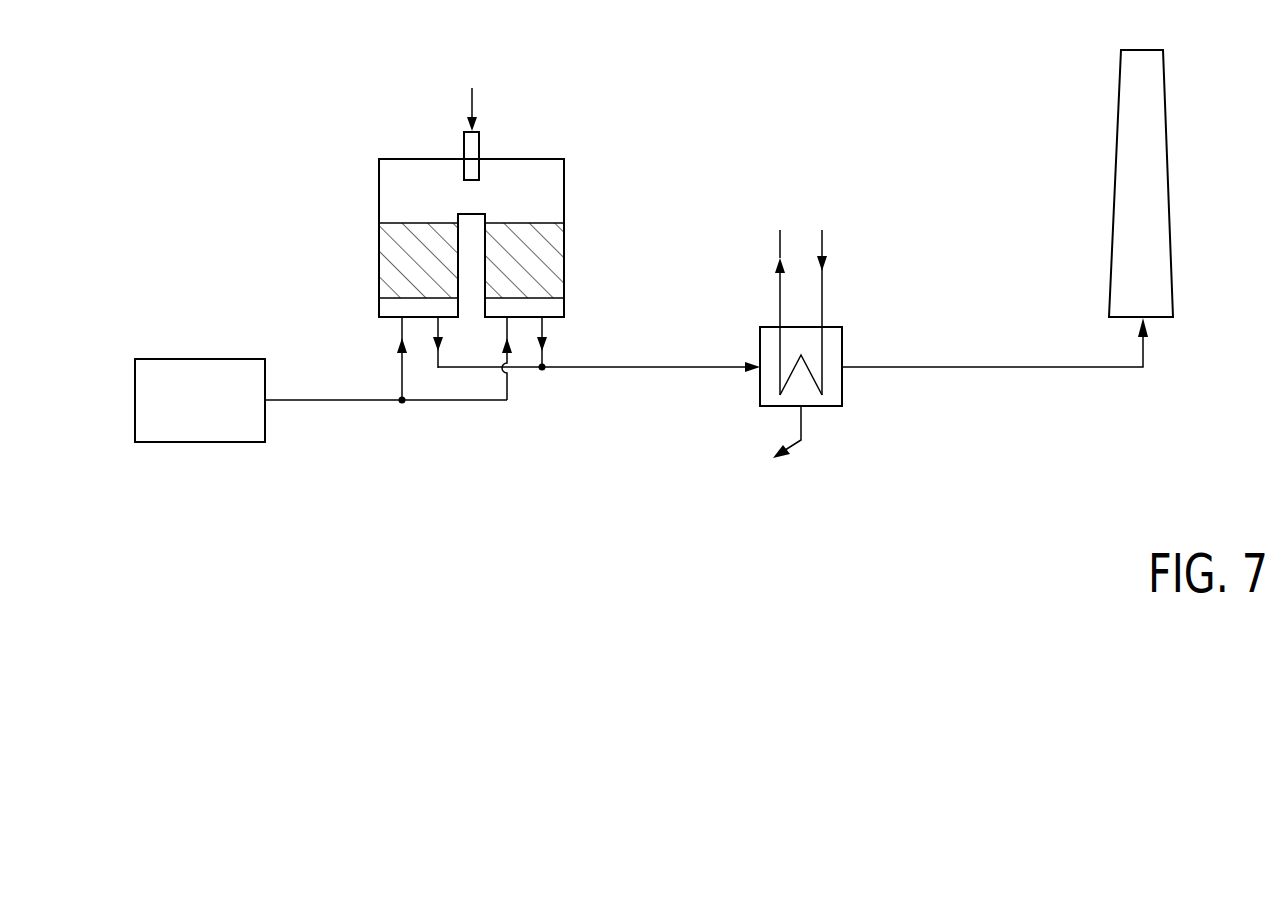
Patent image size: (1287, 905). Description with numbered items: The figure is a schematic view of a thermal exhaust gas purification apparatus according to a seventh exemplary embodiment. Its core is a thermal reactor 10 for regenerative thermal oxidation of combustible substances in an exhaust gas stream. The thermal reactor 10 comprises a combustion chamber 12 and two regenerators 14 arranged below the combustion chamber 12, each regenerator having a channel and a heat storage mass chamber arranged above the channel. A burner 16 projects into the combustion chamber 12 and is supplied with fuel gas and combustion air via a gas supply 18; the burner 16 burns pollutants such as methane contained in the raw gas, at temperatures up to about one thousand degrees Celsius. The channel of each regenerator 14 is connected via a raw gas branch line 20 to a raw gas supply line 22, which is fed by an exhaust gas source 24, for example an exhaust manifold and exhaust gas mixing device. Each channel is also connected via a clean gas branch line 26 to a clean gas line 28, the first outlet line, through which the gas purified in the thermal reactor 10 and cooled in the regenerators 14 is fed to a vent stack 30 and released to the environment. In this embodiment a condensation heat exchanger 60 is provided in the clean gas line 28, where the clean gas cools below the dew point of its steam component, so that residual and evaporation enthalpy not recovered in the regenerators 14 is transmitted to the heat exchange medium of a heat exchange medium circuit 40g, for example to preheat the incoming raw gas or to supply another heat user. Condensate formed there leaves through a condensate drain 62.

The thermal reactor 10 is at (598, 236).
The combustion chamber 12 is at (407, 165).
The regenerators 14 is at (390, 258).
The burner 16 is at (472, 150).
The gas supply 18 is at (475, 105).
The raw gas branch line 20 is at (402, 368).
The raw gas supply line 22 is at (335, 403).
The exhaust gas source 24 is at (198, 358).
The clean gas branch line 26 is at (545, 325).
The clean gas line 28 is at (692, 370).
The vent stack 30 is at (1120, 200).
The heat exchange medium circuit 40g is at (825, 282).
The condensation heat exchanger 60 is at (843, 338).
The condensate drain 62 is at (803, 442).